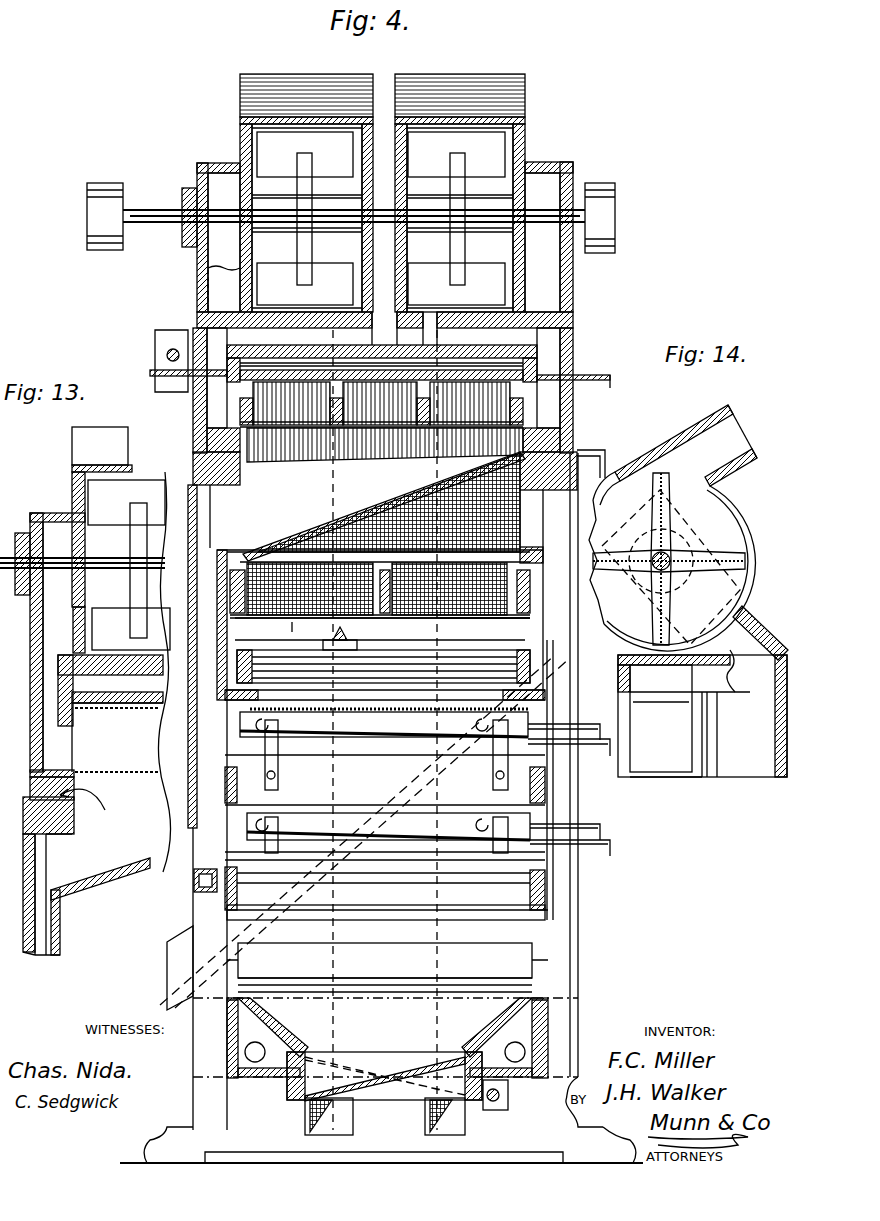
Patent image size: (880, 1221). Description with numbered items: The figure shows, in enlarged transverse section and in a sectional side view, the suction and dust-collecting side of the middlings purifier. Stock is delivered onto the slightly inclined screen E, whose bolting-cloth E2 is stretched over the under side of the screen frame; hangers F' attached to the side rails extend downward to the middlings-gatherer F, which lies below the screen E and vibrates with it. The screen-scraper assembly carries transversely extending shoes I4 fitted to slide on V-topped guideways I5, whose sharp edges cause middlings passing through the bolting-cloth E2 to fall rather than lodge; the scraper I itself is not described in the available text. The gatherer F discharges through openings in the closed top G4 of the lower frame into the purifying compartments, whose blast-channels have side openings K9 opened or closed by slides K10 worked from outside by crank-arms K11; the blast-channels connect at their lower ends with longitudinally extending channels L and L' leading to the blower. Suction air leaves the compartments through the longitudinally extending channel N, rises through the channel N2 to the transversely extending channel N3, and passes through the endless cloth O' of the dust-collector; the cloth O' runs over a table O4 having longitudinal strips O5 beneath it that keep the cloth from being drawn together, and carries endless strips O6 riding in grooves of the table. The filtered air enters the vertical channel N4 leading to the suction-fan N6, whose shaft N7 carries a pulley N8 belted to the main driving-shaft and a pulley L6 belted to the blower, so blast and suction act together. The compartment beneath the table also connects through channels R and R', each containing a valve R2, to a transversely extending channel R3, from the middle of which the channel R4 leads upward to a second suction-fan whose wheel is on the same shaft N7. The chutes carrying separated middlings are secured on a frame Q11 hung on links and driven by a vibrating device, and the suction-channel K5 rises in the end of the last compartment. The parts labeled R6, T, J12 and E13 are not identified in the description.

In FIG. 4, the suction-fan N6 is at (303, 96).
In FIG. 13, the suction-fan N6 is at (95, 496).
In FIG. 14, the suction-fan N6 is at (723, 512).
In FIG. 4, the suction-channel K5 is at (497, 152).
In FIG. 4, the vertical channel N4 is at (220, 253).
In FIG. 13, the vertical channel N4 is at (50, 622).
In FIG. 14, the vertical channel N4 is at (757, 757).
In FIG. 4, the channel R4 is at (382, 218).
In FIG. 4, the fan shaft N7 is at (548, 215).
In FIG. 4, the pulley L6 is at (100, 190).
In FIG. 4, the pulley N8 is at (608, 210).
In FIG. 4, the transversely-extending channel R3 is at (315, 338).
In FIG. 4, the air opening R6 is at (410, 340).
In FIG. 4, the channel R is at (183, 390).
In FIG. 4, the channel R' is at (575, 390).
In FIG. 14, the channel R' is at (666, 783).
In FIG. 4, the valve R2 is at (150, 373).
In FIG. 14, the valve R2 is at (661, 718).
In FIG. 4, the endless strips O6 is at (258, 380).
In FIG. 4, the longitudinal strips O5 is at (330, 388).
In FIG. 4, the table O4 is at (380, 403).
In FIG. 4, the endless traveling cloth O' is at (385, 445).
In FIG. 13, the endless traveling cloth O' is at (100, 799).
In FIG. 4, the upwardly-extending channel N2 is at (200, 724).
In FIG. 13, the upwardly-extending channel N2 is at (40, 929).
In FIG. 4, the transversely-extending channel N3 is at (380, 518).
In FIG. 13, the transversely-extending channel N3 is at (117, 775).
In FIG. 4, the inclined screen T is at (527, 521).
In FIG. 4, the middlings-gatherer F is at (397, 590).
In FIG. 4, the shoes I4 is at (327, 644).
In FIG. 4, the guideways I5 is at (292, 624).
In FIG. 4, the shaker bar I is at (380, 633).
In FIG. 4, the screen E is at (420, 618).
In FIG. 4, the bolting-cloth E2 is at (485, 627).
In FIG. 4, the hangers F' is at (383, 666).
In FIG. 4, the closed top G4 is at (385, 692).
In FIG. 4, the slide K10 is at (420, 711).
In FIG. 4, the side openings K9 is at (353, 713).
In FIG. 4, the crank-arms K11 is at (593, 708).
In FIG. 4, the longitudinally-extending channel N is at (194, 882).
In FIG. 4, the longitudinally-extending channel L is at (255, 1038).
In FIG. 4, the longitudinally-extending channel L' is at (533, 1038).
In FIG. 4, the chute frame Q11 is at (287, 1080).
In FIG. 4, the bolt J12 is at (500, 1100).
In FIG. 4, the guide plate E13 is at (165, 960).